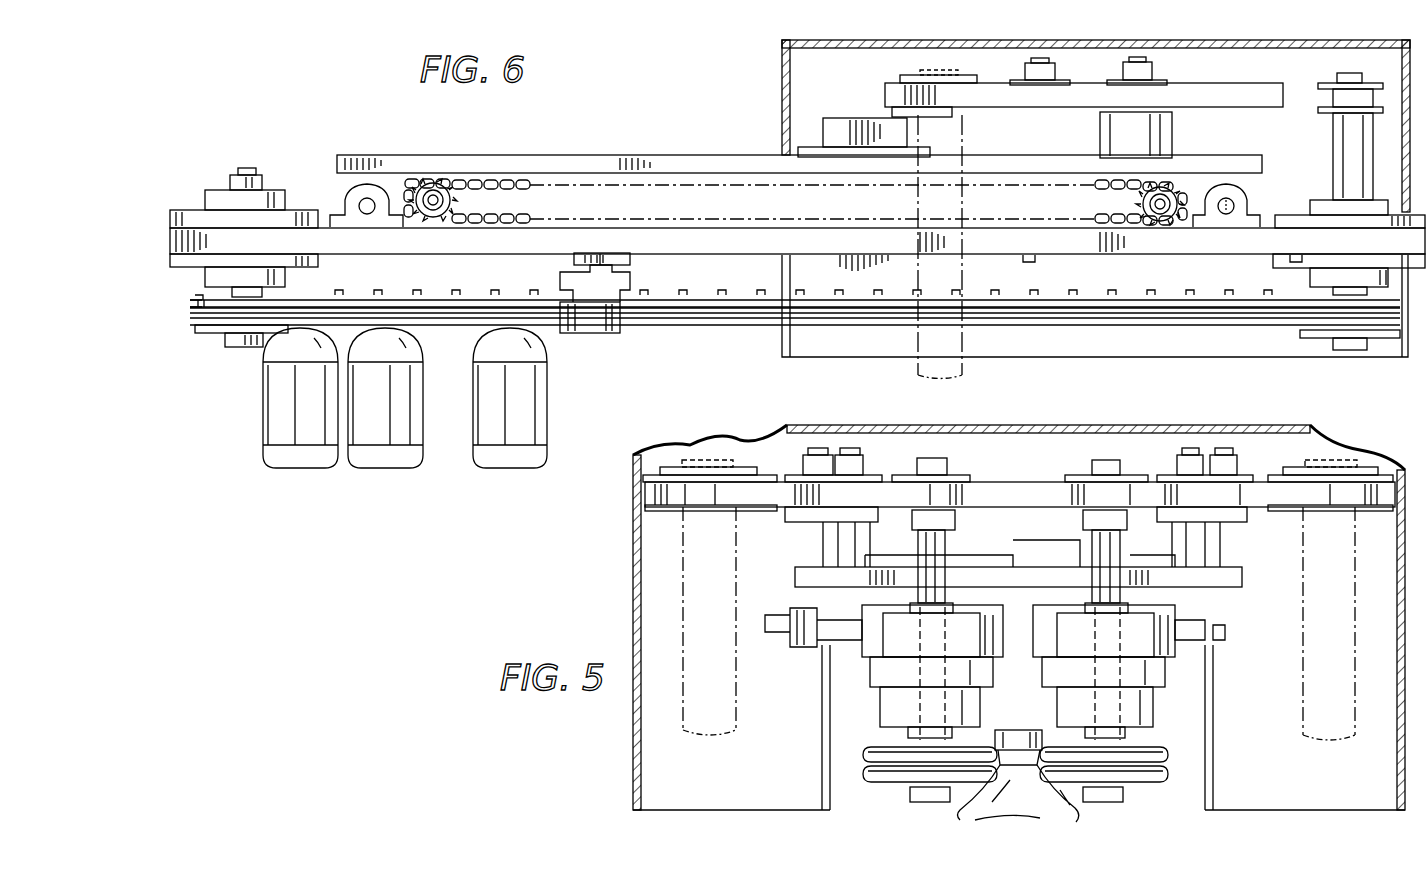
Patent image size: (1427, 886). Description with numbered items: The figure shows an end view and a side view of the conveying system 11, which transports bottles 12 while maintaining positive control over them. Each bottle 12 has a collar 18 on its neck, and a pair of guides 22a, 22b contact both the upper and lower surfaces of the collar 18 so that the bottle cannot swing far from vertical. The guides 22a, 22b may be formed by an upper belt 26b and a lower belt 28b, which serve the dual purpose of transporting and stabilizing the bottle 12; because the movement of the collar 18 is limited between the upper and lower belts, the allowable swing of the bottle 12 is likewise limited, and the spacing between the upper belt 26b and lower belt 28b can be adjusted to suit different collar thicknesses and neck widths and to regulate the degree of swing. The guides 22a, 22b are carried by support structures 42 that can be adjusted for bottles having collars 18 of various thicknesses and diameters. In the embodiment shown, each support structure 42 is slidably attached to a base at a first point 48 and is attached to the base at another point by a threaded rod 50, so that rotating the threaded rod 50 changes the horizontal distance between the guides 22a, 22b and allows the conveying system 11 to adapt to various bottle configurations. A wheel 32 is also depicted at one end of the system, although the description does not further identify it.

In FIG. 6, the conveying system 11 is at (716, 124).
In FIG. 6, the bottle 12 is at (545, 410).
In FIG. 5, the bottle 12 is at (1058, 808).
In FIG. 5, the collar 18 is at (980, 807).
In FIG. 5, the guide 22a is at (862, 783).
In FIG. 6, the guide 22b is at (700, 320).
In FIG. 5, the guide 22b is at (1160, 783).
In FIG. 6, the upper belt 26b is at (188, 305).
In FIG. 6, the lower belt 28b is at (195, 313).
In FIG. 6, the drive wheel 32 is at (216, 185).
In FIG. 6, the support structure 42 is at (962, 357).
In FIG. 5, the support structure 42 is at (1300, 692).
In FIG. 6, the first point 48 is at (1172, 186).
In FIG. 6, the threaded rod 50 is at (447, 168).